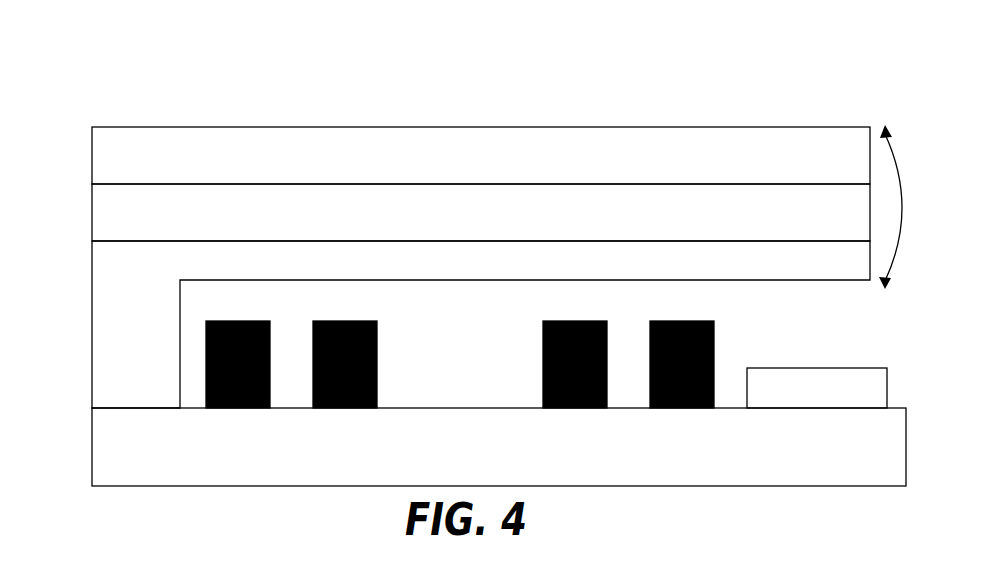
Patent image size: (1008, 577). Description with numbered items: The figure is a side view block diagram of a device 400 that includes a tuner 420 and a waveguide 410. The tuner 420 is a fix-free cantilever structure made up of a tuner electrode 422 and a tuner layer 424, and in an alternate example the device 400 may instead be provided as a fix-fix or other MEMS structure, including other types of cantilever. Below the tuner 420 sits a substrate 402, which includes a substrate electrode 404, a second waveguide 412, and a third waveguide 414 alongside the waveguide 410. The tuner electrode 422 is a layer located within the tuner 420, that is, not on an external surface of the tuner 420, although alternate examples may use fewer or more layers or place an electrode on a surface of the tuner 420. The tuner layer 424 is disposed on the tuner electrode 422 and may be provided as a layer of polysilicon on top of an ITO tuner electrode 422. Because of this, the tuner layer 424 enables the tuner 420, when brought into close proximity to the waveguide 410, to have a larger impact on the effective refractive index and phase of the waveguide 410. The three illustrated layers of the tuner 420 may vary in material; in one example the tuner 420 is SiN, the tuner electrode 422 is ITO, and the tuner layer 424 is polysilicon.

The device 400 is at (157, 50).
The substrate 402 is at (92, 442).
The substrate electrode 404 is at (836, 367).
The waveguide 410 is at (377, 362).
The second waveguide 412 is at (237, 321).
The third waveguide 414 is at (685, 321).
The tuner 420 is at (92, 320).
The tuner electrode 422 is at (92, 220).
The tuner layer 424 is at (92, 162).